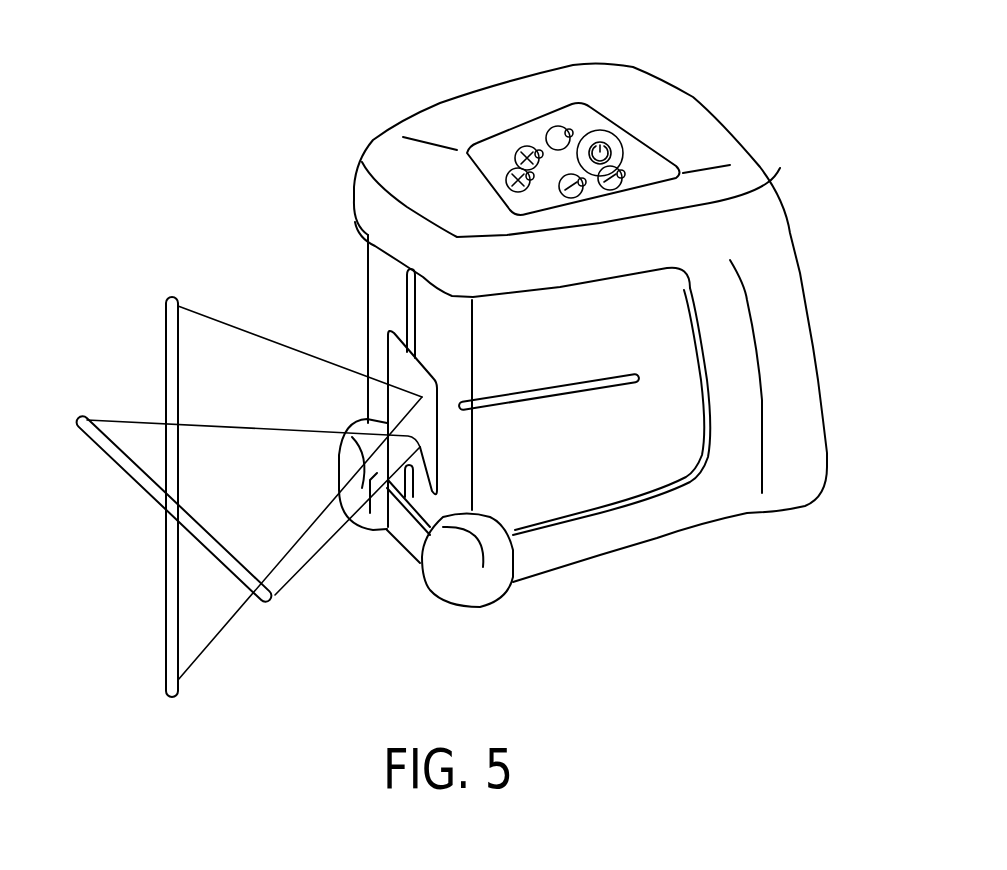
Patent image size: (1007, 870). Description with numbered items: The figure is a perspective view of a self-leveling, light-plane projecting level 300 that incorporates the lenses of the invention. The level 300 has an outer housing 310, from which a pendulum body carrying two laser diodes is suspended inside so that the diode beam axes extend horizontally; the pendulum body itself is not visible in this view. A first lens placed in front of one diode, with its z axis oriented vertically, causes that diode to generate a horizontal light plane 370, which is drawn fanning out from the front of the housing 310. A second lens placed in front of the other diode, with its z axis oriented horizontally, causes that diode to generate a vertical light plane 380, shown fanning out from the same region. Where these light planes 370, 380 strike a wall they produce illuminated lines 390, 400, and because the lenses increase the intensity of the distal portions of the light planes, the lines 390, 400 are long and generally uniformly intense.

The level 300 is at (328, 110).
The housing 310 is at (813, 337).
The horizontal light plane 370 is at (118, 420).
The vertical light plane 380 is at (233, 325).
The illuminated line 390 is at (101, 447).
The illuminated line 400 is at (166, 600).